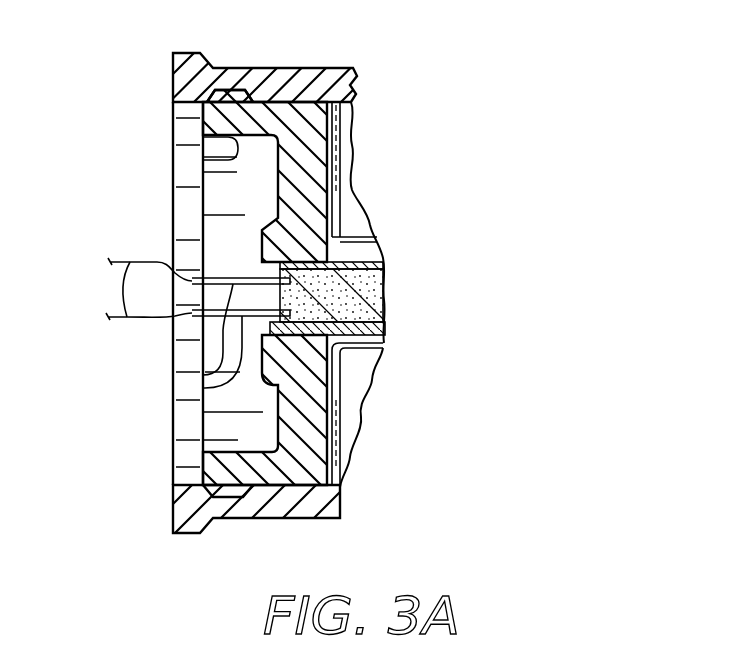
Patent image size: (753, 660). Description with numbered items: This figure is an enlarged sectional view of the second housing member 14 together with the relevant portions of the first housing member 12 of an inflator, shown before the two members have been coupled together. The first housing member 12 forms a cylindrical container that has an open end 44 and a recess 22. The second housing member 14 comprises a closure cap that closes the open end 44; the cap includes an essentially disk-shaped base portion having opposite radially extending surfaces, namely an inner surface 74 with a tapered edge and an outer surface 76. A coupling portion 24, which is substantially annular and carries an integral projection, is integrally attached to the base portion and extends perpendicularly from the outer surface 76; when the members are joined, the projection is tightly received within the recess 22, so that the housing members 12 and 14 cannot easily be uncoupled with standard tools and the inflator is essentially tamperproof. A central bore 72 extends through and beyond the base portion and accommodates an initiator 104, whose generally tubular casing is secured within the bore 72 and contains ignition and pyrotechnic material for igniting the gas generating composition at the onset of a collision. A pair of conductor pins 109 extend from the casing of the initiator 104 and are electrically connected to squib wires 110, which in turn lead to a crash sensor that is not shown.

The first housing member 12 is at (330, 70).
The second housing member 14 is at (276, 120).
The recess 22 is at (231, 130).
The coupling portion 24 is at (228, 153).
The open end 44 is at (173, 222).
The central bore 72 is at (365, 258).
The inner surface 74 is at (342, 193).
The outer surface 76 is at (276, 208).
The initiator 104 is at (368, 291).
The conductor pins 109 is at (203, 380).
The squib wires 110 is at (157, 262).